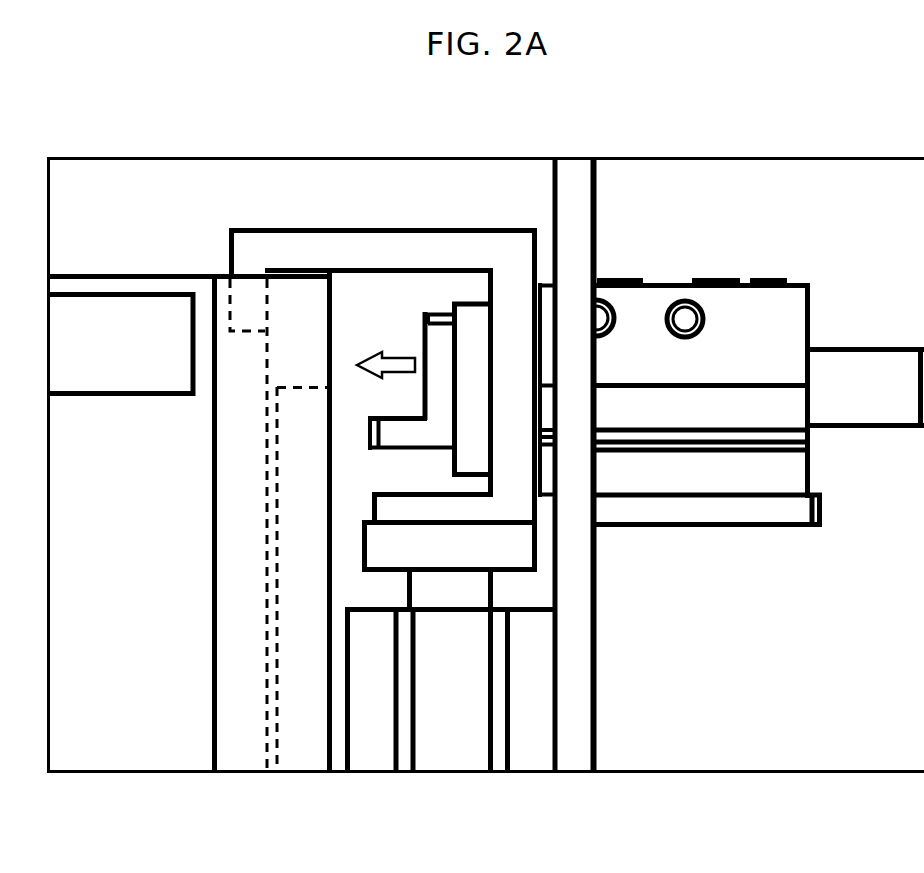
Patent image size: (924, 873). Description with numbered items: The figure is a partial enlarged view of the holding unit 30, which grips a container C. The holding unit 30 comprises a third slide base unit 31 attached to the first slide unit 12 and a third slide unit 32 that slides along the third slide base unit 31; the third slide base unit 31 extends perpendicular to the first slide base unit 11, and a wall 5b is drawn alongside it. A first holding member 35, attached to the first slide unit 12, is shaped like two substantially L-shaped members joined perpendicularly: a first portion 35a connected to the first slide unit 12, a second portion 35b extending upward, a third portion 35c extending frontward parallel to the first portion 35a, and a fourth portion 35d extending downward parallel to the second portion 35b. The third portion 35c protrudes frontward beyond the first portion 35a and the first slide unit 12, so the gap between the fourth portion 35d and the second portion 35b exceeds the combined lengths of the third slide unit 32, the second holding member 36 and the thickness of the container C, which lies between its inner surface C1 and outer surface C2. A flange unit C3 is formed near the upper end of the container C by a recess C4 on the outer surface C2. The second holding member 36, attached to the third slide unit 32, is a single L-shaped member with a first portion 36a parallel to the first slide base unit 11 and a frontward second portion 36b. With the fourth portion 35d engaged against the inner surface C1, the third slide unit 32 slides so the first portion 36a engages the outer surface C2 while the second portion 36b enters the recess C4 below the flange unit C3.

The container C is at (100, 248).
The inner surface C1 is at (260, 292).
The outer surface C2 is at (333, 588).
The flange unit C3 is at (308, 346).
The recess C4 is at (304, 390).
The wall 5b is at (572, 187).
The first slide base unit 11 is at (533, 727).
The first slide unit 12 is at (517, 548).
The holding unit 30 is at (401, 186).
The third slide base unit 31 is at (767, 313).
The third slide unit 32 is at (471, 317).
The first holding member 35 is at (496, 208).
The first portion 35a is at (403, 513).
The second portion 35b is at (513, 258).
The third portion 35c is at (293, 247).
The fourth portion 35d is at (245, 303).
The second holding member 36 is at (432, 340).
The first portion 36a is at (438, 400).
The second portion 36b is at (398, 438).